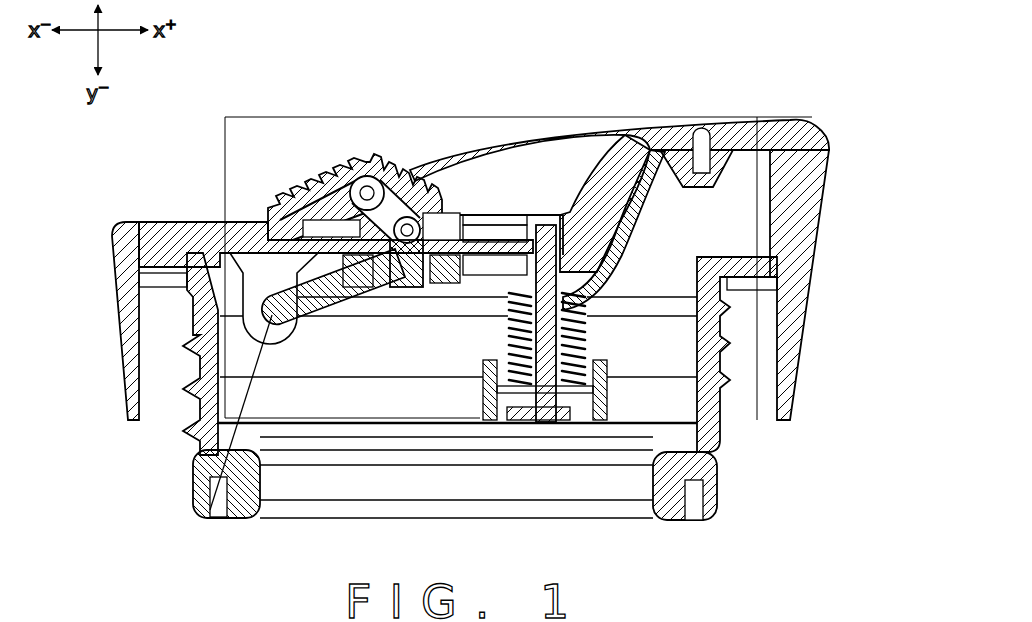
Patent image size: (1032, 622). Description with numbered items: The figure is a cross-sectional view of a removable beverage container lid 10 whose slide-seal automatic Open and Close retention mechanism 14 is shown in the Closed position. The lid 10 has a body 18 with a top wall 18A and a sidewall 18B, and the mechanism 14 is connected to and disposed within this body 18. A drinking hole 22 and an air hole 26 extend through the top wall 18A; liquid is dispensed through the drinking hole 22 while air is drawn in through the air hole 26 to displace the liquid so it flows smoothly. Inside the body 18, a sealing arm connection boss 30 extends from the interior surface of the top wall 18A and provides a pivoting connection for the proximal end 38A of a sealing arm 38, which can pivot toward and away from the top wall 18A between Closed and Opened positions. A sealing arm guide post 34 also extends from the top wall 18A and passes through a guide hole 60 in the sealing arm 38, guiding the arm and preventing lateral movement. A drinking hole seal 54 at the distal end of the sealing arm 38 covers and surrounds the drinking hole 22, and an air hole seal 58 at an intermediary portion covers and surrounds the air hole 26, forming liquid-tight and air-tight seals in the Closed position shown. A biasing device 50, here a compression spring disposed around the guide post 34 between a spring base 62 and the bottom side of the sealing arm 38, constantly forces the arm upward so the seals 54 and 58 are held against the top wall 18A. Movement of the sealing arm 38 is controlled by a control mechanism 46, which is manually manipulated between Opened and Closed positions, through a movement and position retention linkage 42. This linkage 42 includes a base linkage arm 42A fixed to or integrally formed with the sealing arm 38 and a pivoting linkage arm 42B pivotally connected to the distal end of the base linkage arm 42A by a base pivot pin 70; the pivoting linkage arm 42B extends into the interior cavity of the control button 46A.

The beverage container lid 10 is at (803, 106).
The slide-seal automatic Open and Close retention mechanism 14 is at (368, 117).
The lid body 18 is at (114, 224).
The top wall 18A is at (250, 235).
The sidewall 18B is at (200, 393).
The drinking hole 22 is at (695, 150).
The air hole 26 is at (460, 238).
The sealing arm connection boss 30 is at (263, 280).
The sealing arm guide post 34 is at (700, 363).
The sealing arm 38 is at (650, 235).
The proximal end 38A is at (660, 155).
The movement and position retention linkage 42 is at (408, 161).
The base linkage arm 42A is at (398, 268).
The pivoting linkage arm 42B is at (385, 200).
The control mechanism 46 is at (329, 163).
The control button 46A is at (360, 165).
The biasing device 50 is at (680, 475).
The drinking hole seal 54 is at (703, 150).
The air hole seal 58 is at (411, 285).
The guide hole 60 is at (640, 257).
The spring base 62 is at (600, 340).
The base pivot pin 70 is at (416, 224).